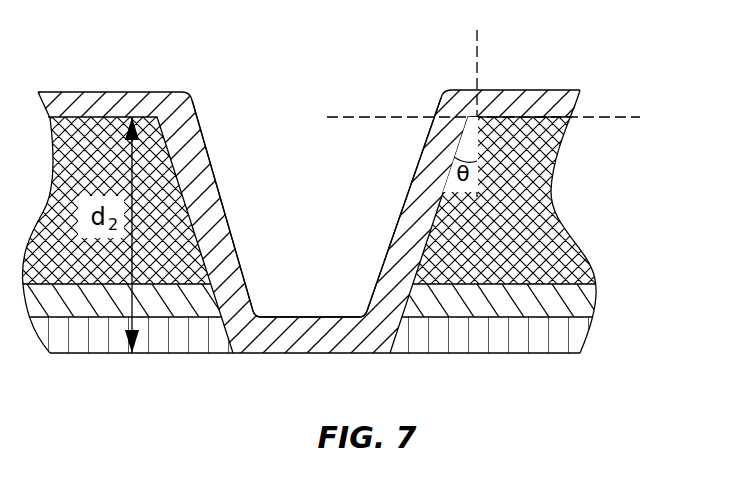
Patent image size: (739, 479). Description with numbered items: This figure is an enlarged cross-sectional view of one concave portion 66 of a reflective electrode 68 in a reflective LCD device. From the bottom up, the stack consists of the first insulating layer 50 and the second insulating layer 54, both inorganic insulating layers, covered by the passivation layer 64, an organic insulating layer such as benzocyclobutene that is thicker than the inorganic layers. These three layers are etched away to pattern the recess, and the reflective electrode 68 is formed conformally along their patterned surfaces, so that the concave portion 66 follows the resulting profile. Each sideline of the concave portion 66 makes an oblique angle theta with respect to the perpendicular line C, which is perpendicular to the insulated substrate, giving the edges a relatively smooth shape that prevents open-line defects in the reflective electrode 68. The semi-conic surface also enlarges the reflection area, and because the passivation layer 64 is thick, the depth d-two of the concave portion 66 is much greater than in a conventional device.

The first insulating layer 50 is at (533, 342).
The second insulating layer 54 is at (585, 305).
The passivation layer 64 is at (533, 210).
The concave portion 66 is at (279, 158).
The reflective electrode 68 is at (532, 102).
The perpendicular line C is at (472, 48).